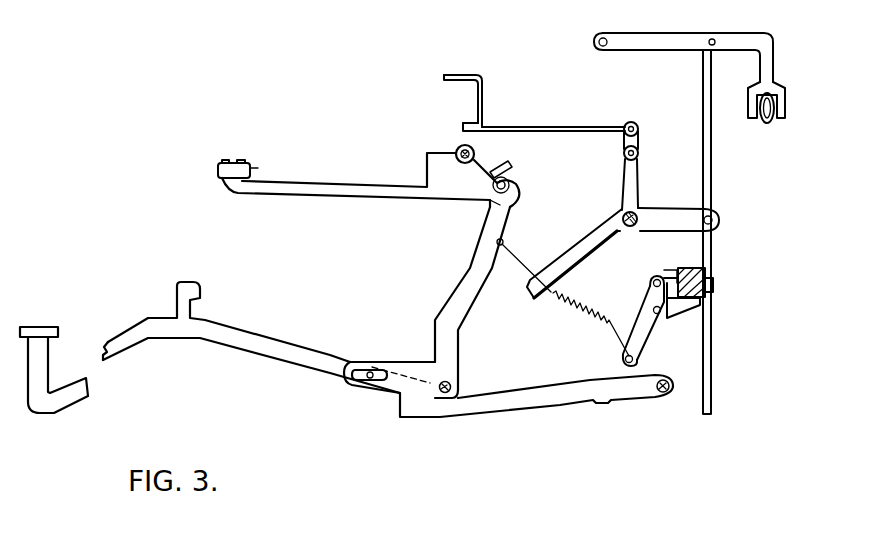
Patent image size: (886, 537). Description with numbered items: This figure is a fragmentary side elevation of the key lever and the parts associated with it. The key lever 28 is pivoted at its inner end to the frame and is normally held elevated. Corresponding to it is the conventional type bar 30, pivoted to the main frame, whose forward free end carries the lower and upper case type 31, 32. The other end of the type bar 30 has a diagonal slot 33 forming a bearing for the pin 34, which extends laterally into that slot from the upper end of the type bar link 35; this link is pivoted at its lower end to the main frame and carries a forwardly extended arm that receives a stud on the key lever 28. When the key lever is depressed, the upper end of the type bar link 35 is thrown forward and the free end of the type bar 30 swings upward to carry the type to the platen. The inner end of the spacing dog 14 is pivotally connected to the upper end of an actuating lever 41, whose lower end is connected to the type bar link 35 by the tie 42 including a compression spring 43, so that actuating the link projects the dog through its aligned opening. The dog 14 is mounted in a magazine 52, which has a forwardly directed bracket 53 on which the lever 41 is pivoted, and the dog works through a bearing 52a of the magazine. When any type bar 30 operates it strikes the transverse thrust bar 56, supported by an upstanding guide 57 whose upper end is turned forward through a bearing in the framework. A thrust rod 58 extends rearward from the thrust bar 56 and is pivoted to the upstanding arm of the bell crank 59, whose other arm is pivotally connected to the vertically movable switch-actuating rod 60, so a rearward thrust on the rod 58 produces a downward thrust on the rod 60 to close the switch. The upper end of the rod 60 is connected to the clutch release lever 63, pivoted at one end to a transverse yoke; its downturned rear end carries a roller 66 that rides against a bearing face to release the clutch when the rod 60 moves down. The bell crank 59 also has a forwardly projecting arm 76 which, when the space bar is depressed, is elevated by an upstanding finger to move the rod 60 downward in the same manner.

The spacing dog 14 is at (667, 269).
The key lever 28 is at (302, 352).
The type bar 30 is at (367, 192).
The lower case type 31 is at (248, 160).
The upper case type 32 is at (220, 160).
The diagonal slot 33 is at (493, 198).
The pin 34 is at (504, 179).
The type bar link 35 is at (457, 298).
The actuating lever 41 is at (642, 327).
The tie 42 is at (535, 269).
The compression spring 43 is at (588, 312).
The magazine 52 is at (702, 270).
The bearing 52a is at (710, 292).
The bracket 53 is at (680, 322).
The thrust bar 56 is at (461, 128).
The guide 57 is at (464, 77).
The thrust rod 58 is at (575, 130).
The bell crank 59 is at (624, 199).
The switch-actuating rod 60 is at (708, 160).
The clutch release lever 63 is at (678, 48).
The roller 66 is at (767, 131).
The forwardly projecting arm 76 is at (598, 244).